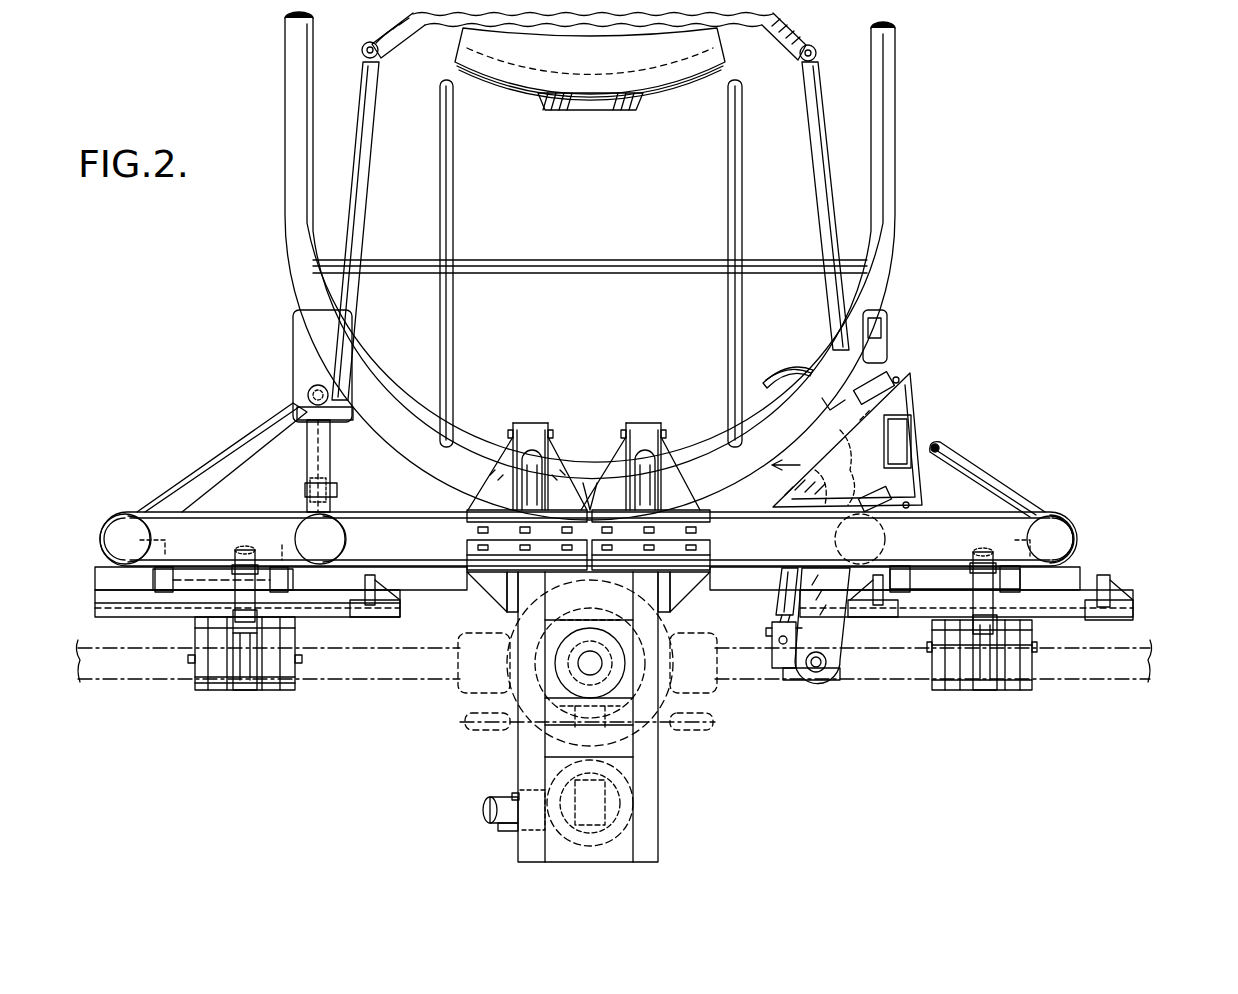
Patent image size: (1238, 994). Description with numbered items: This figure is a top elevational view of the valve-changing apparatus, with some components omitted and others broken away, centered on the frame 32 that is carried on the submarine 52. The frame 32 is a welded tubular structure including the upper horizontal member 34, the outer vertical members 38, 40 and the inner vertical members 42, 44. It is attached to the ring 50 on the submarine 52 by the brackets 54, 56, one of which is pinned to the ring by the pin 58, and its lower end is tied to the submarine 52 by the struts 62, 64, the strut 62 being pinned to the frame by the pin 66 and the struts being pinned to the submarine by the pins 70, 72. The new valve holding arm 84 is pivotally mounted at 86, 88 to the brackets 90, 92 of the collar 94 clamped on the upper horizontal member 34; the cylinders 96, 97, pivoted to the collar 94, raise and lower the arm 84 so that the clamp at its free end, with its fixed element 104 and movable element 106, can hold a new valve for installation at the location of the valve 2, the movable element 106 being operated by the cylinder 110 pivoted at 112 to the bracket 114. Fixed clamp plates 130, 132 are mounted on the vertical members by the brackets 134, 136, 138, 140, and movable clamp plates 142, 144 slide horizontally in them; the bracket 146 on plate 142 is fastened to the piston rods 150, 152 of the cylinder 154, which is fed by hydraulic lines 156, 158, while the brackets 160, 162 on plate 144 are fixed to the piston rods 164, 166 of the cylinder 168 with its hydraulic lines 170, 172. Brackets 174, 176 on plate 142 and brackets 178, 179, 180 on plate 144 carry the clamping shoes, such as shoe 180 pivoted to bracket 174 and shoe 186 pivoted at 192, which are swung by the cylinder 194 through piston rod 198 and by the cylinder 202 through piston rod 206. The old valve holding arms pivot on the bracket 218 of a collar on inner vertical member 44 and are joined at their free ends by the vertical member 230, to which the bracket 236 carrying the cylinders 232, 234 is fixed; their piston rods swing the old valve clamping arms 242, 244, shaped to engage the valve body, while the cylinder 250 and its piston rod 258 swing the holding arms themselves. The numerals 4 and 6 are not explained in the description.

The valve 2 is at (700, 708).
The left axle 4 is at (131, 693).
The right axle 6 is at (1117, 690).
The frame 32 is at (1050, 505).
The upper horizontal member 34 is at (402, 512).
The outer vertical member 38 is at (98, 530).
The outer vertical member 40 is at (1062, 526).
The inner vertical member 42 is at (346, 537).
The inner vertical member 44 is at (888, 538).
The ring 50 is at (880, 195).
The submarine 52 is at (590, 82).
The bracket 54 is at (215, 465).
The bracket 56 is at (985, 488).
The pin 58 is at (307, 395).
The strut 62 is at (358, 200).
The strut 64 is at (818, 202).
The pin 66 is at (338, 490).
The pin 70 is at (380, 58).
The pin 72 is at (798, 62).
The new valve holding arm 84 is at (655, 792).
The pivot 86 is at (672, 602).
The pivot 88 is at (508, 600).
The bracket 90 is at (475, 562).
The bracket 92 is at (672, 588).
The collar 94 is at (722, 518).
The cylinder 96 is at (642, 445).
The cylinder 97 is at (527, 445).
The fixed element 104 is at (620, 815).
The movable element 106 is at (530, 785).
The cylinder 110 is at (483, 808).
The pivot 112 is at (514, 832).
The bracket 114 is at (511, 796).
The fixed clamp plate 130 is at (300, 604).
The fixed clamp plate 132 is at (1080, 602).
The bracket 134 is at (95, 568).
The bracket 136 is at (332, 596).
The bracket 138 is at (380, 590).
The bracket 140 is at (1080, 565).
The movable clamp plate 142 is at (395, 614).
The movable clamp plate 144 is at (1122, 620).
The bracket 146 is at (95, 598).
The piston rod 150 is at (137, 612).
The piston rod 152 is at (358, 596).
The cylinder 154 is at (210, 578).
The hydraulic line 156 is at (160, 556).
The hydraulic line 158 is at (280, 556).
The bracket 160 is at (848, 568).
The bracket 162 is at (1120, 600).
The piston rod 164 is at (876, 596).
The piston rod 166 is at (1095, 580).
The cylinder 168 is at (950, 580).
The hydraulic line 170 is at (933, 549).
The hydraulic line 172 is at (999, 540).
The bracket 174 is at (198, 690).
The bracket 176 is at (290, 690).
The bracket 178 is at (1030, 690).
The bracket 179 is at (935, 690).
The clamping shoe 180 is at (245, 690).
The clamping shoe 186 is at (985, 690).
The pivot 192 is at (1040, 660).
The cylinder 194 is at (240, 600).
The piston rod 198 is at (246, 672).
The cylinder 202 is at (988, 598).
The piston rod 206 is at (968, 680).
The bracket 218 is at (880, 568).
The vertical member 230 is at (912, 437).
The cylinder 232 is at (880, 385).
The cylinder 234 is at (875, 510).
The bracket 236 is at (914, 395).
The old valve clamping arm 242 is at (788, 366).
The old valve clamping arm 244 is at (826, 482).
The cylinder 250 is at (777, 590).
The piston rod 258 is at (771, 645).